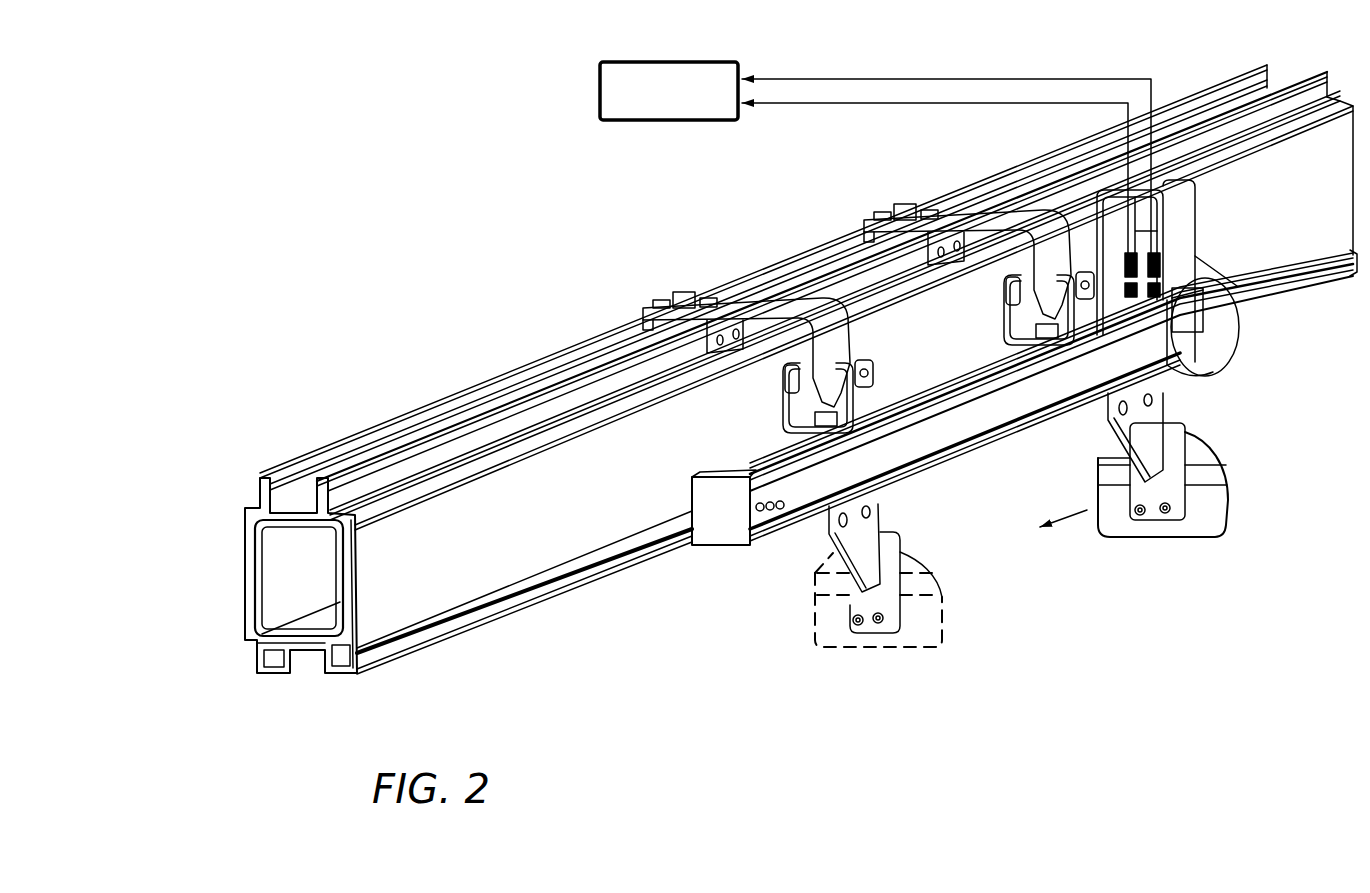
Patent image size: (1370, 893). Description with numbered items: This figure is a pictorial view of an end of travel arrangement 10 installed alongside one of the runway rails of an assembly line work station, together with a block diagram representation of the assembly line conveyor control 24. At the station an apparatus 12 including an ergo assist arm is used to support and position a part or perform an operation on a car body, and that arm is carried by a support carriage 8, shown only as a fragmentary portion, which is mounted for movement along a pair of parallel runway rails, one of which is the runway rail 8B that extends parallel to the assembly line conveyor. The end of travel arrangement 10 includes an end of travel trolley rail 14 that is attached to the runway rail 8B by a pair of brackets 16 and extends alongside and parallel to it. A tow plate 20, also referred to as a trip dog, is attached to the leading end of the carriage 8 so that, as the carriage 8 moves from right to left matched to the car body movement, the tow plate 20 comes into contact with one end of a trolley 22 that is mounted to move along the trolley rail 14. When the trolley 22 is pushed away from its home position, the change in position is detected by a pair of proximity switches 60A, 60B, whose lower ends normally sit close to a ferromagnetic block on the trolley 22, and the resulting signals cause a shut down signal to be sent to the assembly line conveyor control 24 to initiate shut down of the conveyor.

The support carriage 8 is at (1212, 518).
The runway rail 8B is at (462, 578).
The end of travel arrangement 10 is at (1205, 414).
The apparatus 12 is at (537, 362).
The end of travel trolley rail 14 is at (945, 458).
The brackets 16 is at (730, 305).
The tow plate 20 is at (1180, 515).
The trolley 22 is at (1138, 437).
The assembly line conveyor control 24 is at (600, 108).
The proximity switch 60A is at (1160, 268).
The proximity switch 60B is at (1124, 262).